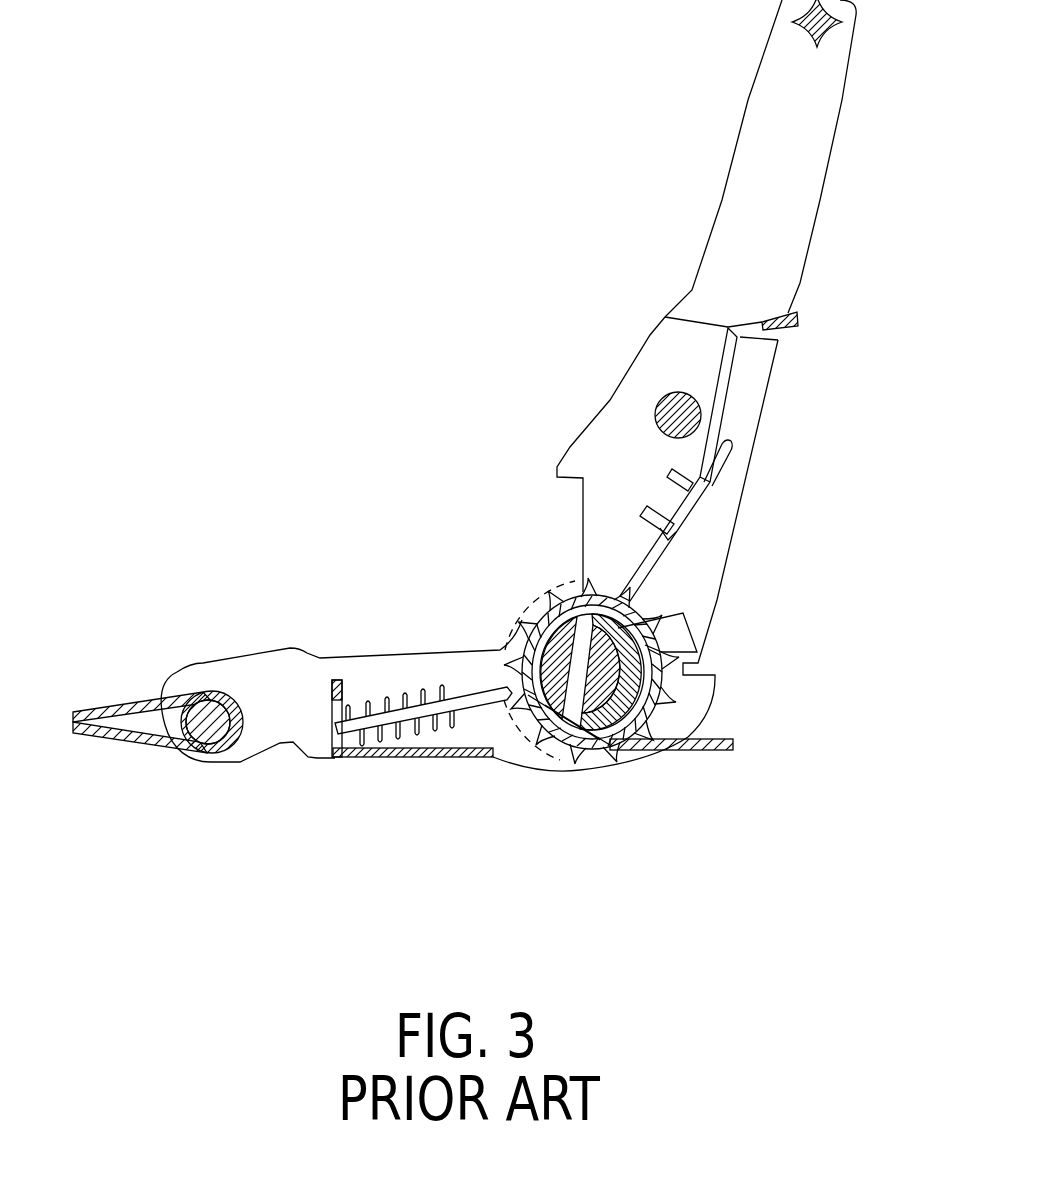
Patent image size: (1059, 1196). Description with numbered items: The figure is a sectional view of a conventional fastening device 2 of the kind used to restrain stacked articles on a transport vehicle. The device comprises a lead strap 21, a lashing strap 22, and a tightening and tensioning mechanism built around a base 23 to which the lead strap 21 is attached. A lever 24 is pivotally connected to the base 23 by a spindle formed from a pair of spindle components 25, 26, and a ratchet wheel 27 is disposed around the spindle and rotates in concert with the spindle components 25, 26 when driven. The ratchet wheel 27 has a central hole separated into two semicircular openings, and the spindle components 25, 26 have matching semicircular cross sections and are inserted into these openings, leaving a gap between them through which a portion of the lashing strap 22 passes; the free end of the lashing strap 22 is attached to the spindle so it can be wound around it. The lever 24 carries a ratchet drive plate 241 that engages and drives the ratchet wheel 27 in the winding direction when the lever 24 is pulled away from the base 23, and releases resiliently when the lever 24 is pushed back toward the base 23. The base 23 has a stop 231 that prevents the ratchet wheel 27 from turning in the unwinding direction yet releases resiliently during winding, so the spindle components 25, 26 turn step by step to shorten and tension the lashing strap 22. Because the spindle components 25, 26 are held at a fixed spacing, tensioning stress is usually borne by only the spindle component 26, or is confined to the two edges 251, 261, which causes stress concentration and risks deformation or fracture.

The fastening device 2 is at (684, 146).
The lead strap 21 is at (93, 737).
The lashing strap 22 is at (700, 753).
The base 23 is at (335, 655).
The stop 231 is at (467, 700).
The lever 24 is at (807, 262).
The ratchet drive plate 241 is at (640, 574).
The spindle component 25 is at (520, 612).
The edge of spindle component 251 is at (557, 598).
The spindle component 26 is at (662, 650).
The edge of spindle component 261 is at (650, 616).
The ratchet wheel 27 is at (560, 580).